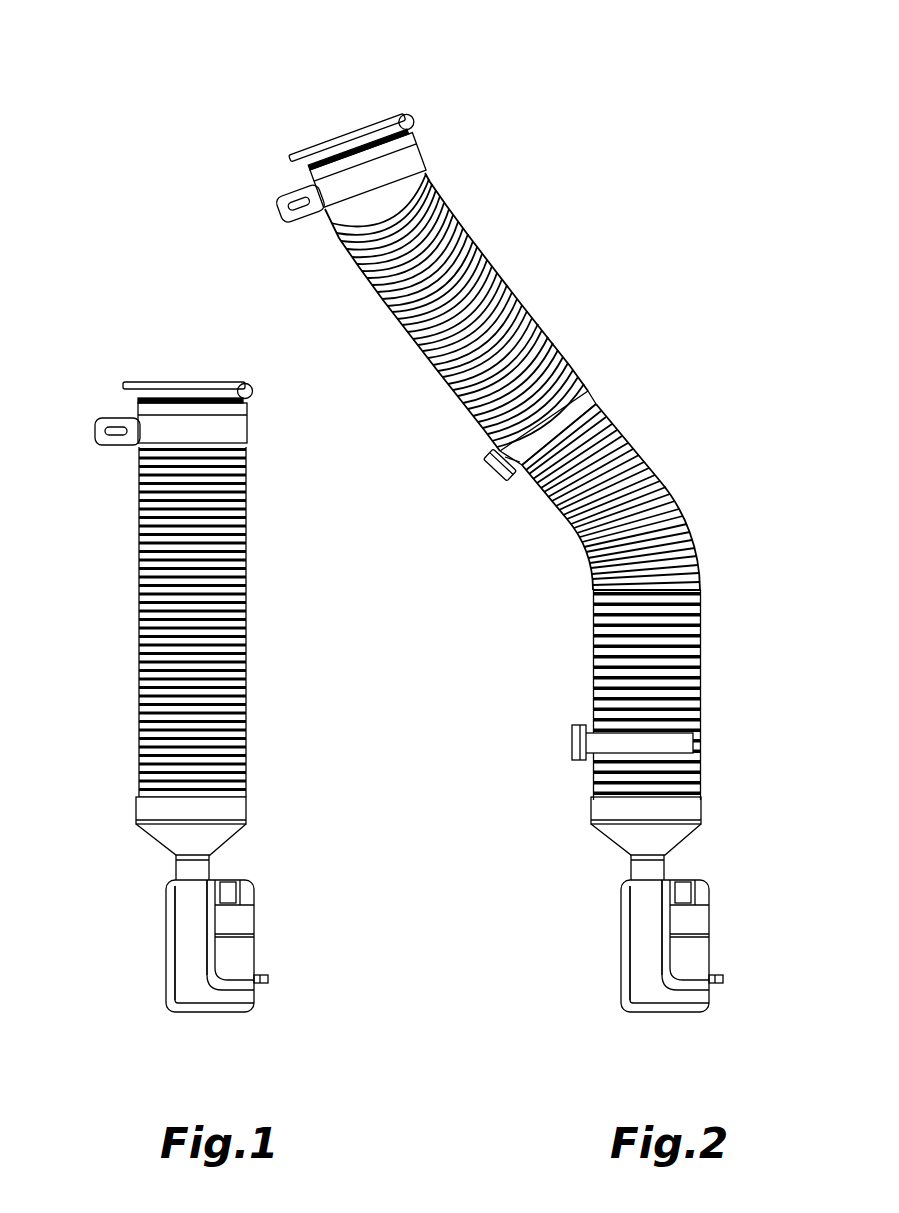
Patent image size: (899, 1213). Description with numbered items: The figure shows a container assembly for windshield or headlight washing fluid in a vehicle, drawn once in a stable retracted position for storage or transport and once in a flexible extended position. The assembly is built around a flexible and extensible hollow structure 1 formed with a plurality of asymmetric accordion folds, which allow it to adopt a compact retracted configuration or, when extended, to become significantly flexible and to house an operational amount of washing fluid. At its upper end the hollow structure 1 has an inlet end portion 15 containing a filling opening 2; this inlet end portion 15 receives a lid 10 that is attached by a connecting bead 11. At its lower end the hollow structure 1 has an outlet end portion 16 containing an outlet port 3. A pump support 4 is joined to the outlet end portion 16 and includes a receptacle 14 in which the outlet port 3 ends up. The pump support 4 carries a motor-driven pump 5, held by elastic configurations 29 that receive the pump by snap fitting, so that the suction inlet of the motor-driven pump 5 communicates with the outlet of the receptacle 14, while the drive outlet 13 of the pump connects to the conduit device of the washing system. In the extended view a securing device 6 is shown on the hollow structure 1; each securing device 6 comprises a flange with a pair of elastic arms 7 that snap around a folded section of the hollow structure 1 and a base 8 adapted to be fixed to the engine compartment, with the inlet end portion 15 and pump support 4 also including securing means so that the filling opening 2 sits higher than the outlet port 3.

In FIG. 1, the hollow structure 1 is at (256, 637).
In FIG. 2, the hollow structure 1 is at (684, 490).
In FIG. 1, the filling opening 2 is at (238, 410).
In FIG. 2, the filling opening 2 is at (400, 138).
In FIG. 1, the outlet port 3 is at (176, 862).
In FIG. 2, the outlet port 3 is at (657, 867).
In FIG. 1, the pump support 4 is at (163, 978).
In FIG. 2, the pump support 4 is at (619, 970).
In FIG. 1, the motor-driven pump 5 is at (245, 923).
In FIG. 2, the motor-driven pump 5 is at (697, 922).
In FIG. 2, the securing device 6 is at (488, 467).
In FIG. 2, the elastic arms 7 is at (572, 410).
In FIG. 2, the base 8 is at (510, 482).
In FIG. 1, the lid 10 is at (177, 383).
In FIG. 2, the lid 10 is at (378, 112).
In FIG. 1, the connecting bead 11 is at (252, 393).
In FIG. 2, the connecting bead 11 is at (404, 117).
In FIG. 1, the drive outlet 13 is at (264, 983).
In FIG. 2, the drive outlet 13 is at (718, 986).
In FIG. 1, the receptacle 14 is at (185, 906).
In FIG. 2, the receptacle 14 is at (643, 910).
In FIG. 1, the inlet end portion 15 is at (126, 392).
In FIG. 2, the inlet end portion 15 is at (303, 162).
In FIG. 1, the outlet end portion 16 is at (253, 816).
In FIG. 2, the outlet end portion 16 is at (705, 818).
In FIG. 1, the elastic configurations 29 is at (235, 980).
In FIG. 2, the elastic configurations 29 is at (692, 978).